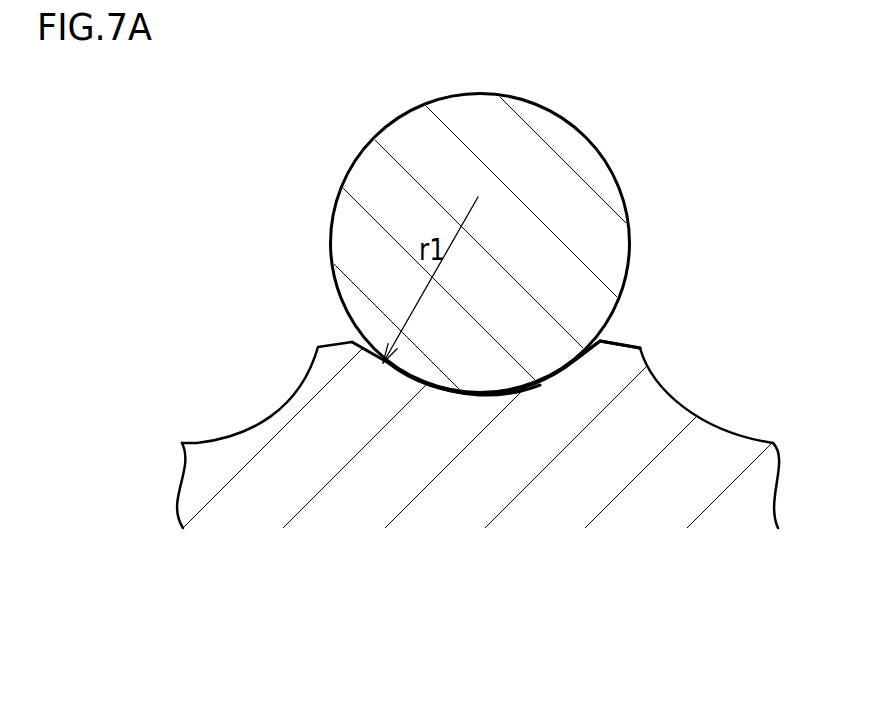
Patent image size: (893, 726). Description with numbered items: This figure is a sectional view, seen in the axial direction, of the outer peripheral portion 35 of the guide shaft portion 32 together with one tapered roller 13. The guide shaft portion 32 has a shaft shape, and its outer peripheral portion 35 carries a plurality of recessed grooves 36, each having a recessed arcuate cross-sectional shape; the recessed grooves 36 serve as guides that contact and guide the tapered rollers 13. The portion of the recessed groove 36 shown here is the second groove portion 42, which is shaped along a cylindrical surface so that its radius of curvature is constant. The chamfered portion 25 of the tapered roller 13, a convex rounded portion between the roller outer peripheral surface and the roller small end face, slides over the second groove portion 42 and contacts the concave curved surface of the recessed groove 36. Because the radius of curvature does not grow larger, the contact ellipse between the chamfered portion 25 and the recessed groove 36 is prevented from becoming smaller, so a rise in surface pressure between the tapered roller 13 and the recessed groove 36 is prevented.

The tapered roller 13 is at (561, 114).
The chamfered portion 25 is at (477, 394).
The guide shaft portion 32 is at (728, 432).
The outer peripheral portion 35 is at (637, 455).
The recessed groove 36 is at (602, 340).
The second groove portion 42 is at (547, 378).